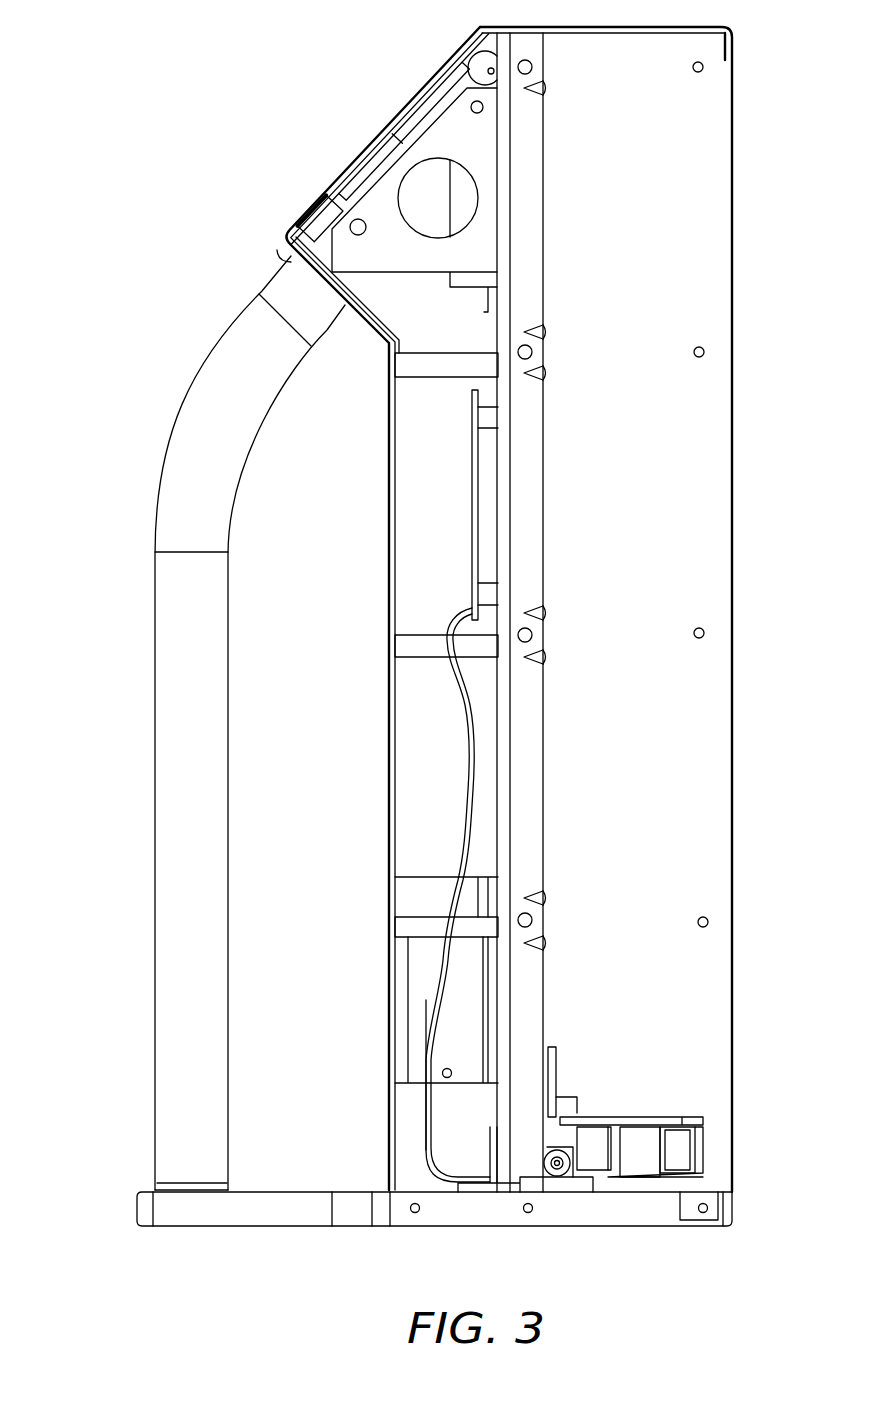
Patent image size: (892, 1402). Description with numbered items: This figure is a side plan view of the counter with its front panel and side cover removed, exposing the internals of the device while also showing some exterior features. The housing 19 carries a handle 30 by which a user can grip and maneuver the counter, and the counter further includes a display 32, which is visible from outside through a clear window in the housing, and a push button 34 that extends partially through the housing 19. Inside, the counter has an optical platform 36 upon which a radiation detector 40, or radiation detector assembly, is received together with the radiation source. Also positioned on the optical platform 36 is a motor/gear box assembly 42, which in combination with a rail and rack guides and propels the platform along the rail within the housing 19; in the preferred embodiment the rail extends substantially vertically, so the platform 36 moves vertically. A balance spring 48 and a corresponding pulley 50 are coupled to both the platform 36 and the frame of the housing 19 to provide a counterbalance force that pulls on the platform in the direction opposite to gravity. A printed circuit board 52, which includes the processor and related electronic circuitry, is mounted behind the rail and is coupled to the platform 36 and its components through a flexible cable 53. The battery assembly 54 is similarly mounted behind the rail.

The housing 19 is at (700, 181).
The handle 30 is at (165, 655).
The display 32 is at (387, 120).
The push button 34 is at (312, 220).
The optical platform 36 is at (642, 1117).
The radiation detector 40 is at (647, 1163).
The motor/gear box assembly 42 is at (572, 1179).
The balance spring 48 is at (453, 180).
The pulley 50 is at (477, 63).
The printed circuit board 52 is at (472, 533).
The flexible cable 53 is at (462, 772).
The battery assembly 54 is at (430, 1008).